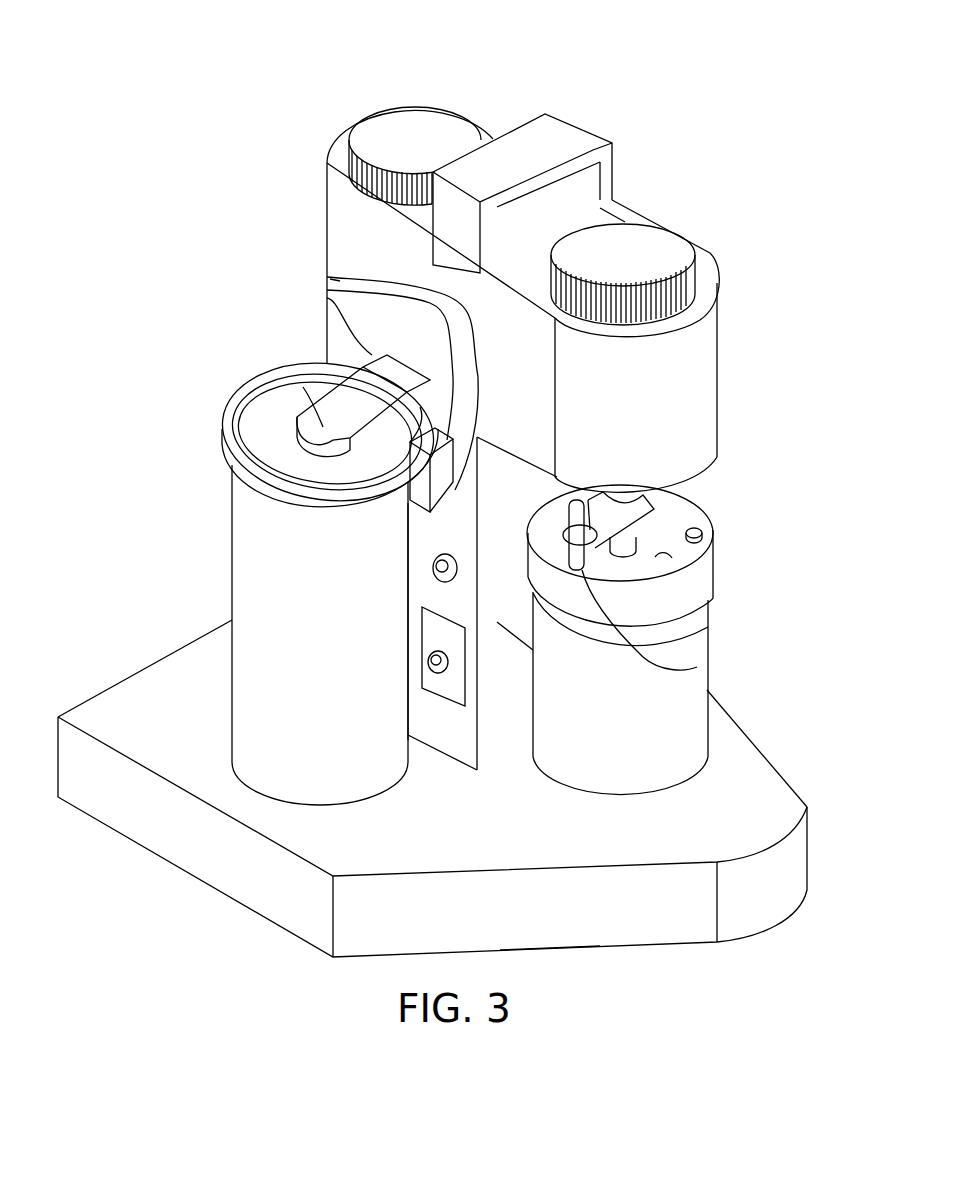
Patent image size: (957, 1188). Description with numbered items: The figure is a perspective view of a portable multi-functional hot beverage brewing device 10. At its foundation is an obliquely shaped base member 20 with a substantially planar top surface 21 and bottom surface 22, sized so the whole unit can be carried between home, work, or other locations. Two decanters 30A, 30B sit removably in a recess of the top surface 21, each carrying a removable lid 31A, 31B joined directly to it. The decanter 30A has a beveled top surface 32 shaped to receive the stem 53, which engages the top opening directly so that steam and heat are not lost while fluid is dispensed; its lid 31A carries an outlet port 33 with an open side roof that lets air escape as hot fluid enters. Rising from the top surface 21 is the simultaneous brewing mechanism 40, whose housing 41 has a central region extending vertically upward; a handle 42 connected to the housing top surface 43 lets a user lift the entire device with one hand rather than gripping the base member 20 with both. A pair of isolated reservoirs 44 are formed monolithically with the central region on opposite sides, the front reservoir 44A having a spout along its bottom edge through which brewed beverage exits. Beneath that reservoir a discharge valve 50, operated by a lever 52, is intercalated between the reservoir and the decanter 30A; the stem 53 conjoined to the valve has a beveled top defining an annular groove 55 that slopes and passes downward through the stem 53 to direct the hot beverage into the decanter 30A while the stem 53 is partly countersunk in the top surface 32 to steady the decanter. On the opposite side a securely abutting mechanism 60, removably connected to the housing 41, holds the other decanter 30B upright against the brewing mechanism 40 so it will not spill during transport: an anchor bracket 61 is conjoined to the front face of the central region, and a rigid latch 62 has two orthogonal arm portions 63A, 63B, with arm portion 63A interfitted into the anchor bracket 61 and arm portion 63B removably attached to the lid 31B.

The multi-functional hot beverage brewing device 10 is at (220, 113).
The base member 20 is at (765, 928).
The top surface 21 is at (153, 727).
The bottom surface 22 is at (612, 948).
The decanter 30A is at (742, 725).
The another decanter 30B is at (232, 593).
The lid 31A is at (715, 557).
The lid 31B is at (223, 414).
The top surface 32 is at (702, 508).
The outlet port 33 is at (702, 532).
The simultaneous brewing mechanism 40 is at (636, 211).
The housing 41 is at (533, 672).
The handle 42 is at (548, 143).
The top surface 43 is at (607, 215).
The isolated reservoirs 44 is at (327, 234).
The front reservoir 44A is at (692, 350).
The discharge valve 50 is at (700, 510).
The lever 52 is at (697, 667).
The stem 53 is at (627, 543).
The groove 55 is at (660, 557).
The securely abutting mechanism 60 is at (327, 298).
The anchor bracket 61 is at (300, 503).
The latch 62 is at (380, 355).
The arm portion 63A is at (335, 282).
The arm portion 63B is at (262, 391).